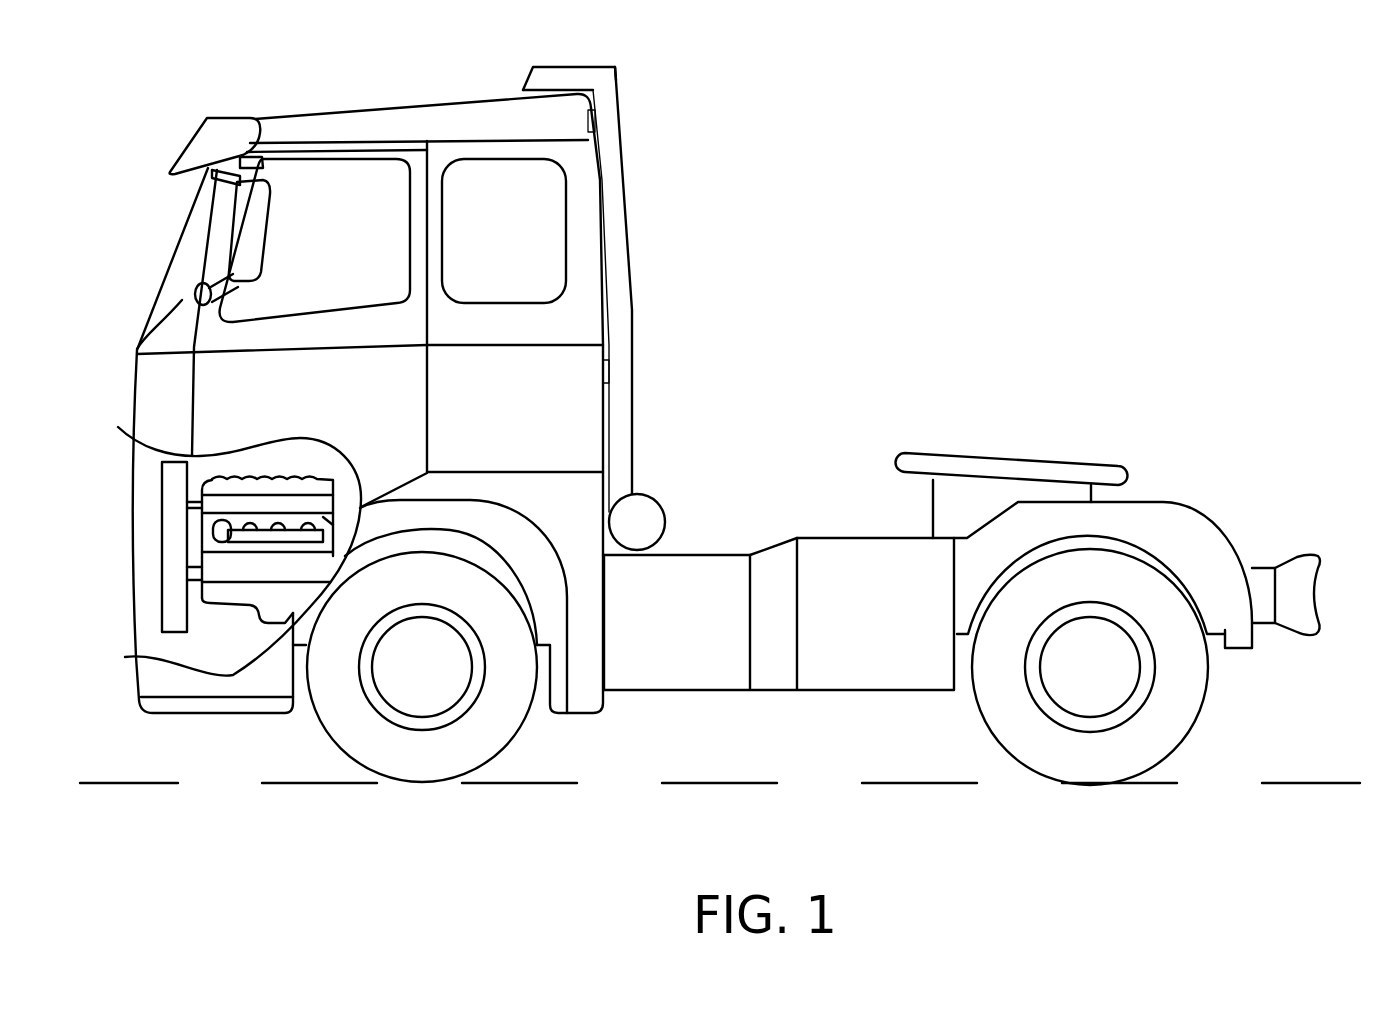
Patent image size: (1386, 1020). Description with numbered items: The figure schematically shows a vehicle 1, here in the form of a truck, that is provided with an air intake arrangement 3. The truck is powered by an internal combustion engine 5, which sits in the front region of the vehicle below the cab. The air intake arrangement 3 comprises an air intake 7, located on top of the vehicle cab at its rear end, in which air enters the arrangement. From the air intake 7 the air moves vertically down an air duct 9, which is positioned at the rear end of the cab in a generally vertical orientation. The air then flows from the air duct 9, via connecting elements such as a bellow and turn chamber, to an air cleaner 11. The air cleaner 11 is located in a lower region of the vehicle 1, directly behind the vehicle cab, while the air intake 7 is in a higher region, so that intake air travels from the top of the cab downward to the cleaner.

The vehicle 1 is at (720, 428).
The air intake arrangement 3 is at (645, 137).
The internal combustion engine 5 is at (250, 563).
The air intake 7 is at (540, 80).
The air duct 9 is at (617, 278).
The air cleaner 11 is at (637, 525).